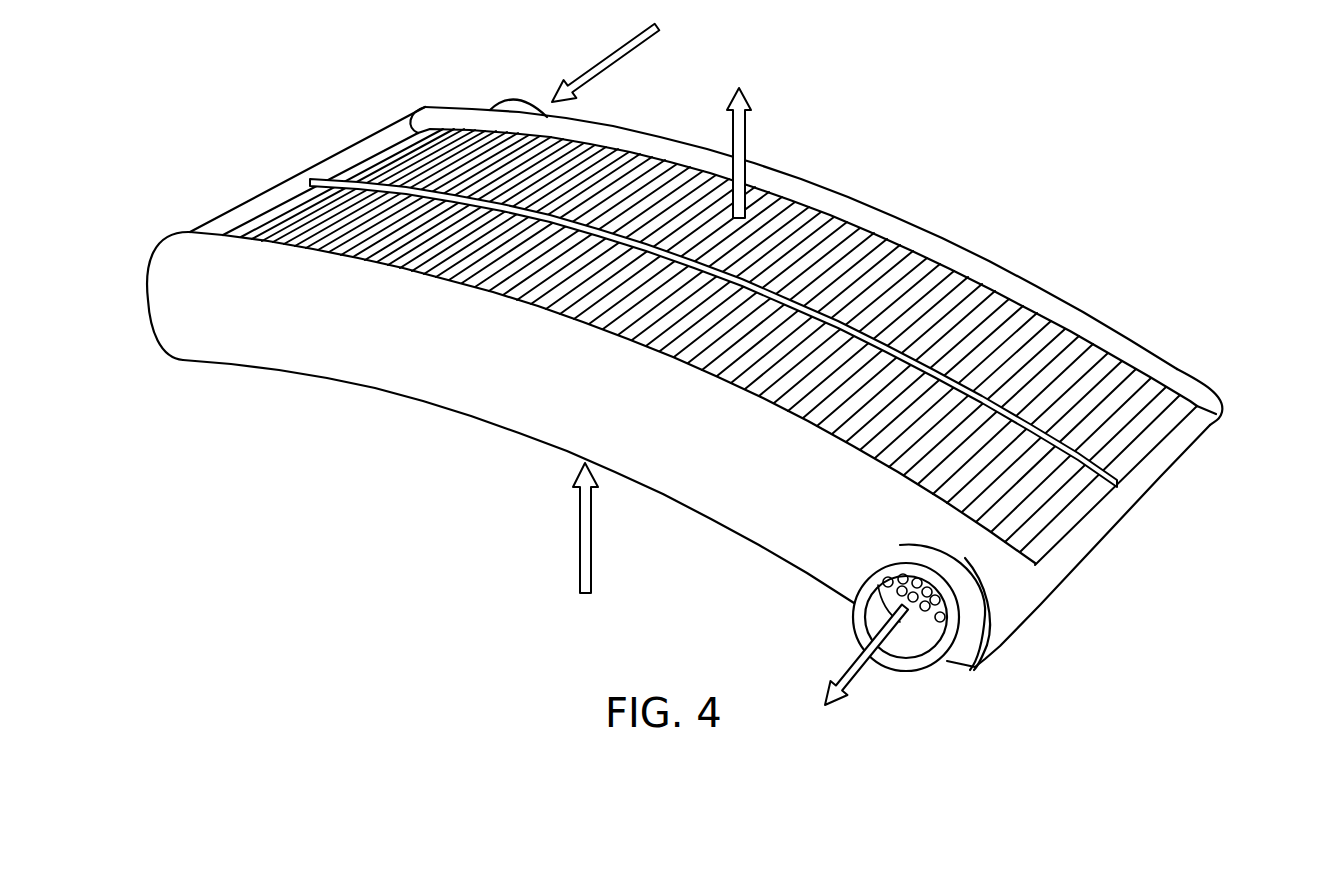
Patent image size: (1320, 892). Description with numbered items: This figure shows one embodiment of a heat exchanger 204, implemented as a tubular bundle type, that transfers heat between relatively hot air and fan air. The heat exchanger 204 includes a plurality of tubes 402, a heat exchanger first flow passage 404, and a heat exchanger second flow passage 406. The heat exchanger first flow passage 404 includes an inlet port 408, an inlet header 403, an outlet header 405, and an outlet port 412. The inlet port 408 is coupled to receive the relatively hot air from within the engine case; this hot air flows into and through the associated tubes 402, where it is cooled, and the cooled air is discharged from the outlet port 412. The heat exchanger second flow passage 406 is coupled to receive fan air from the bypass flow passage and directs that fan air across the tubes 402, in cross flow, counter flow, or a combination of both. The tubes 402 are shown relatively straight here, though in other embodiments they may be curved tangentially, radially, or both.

The heat exchanger 204 is at (708, 368).
The tubes 402 is at (1158, 407).
The inlet header 403 is at (925, 240).
The heat exchanger first flow passage 404 is at (605, 60).
The outlet header 405 is at (317, 348).
The heat exchanger second flow passage 406 is at (748, 145).
The inlet port 408 is at (500, 102).
The outlet port 412 is at (923, 625).